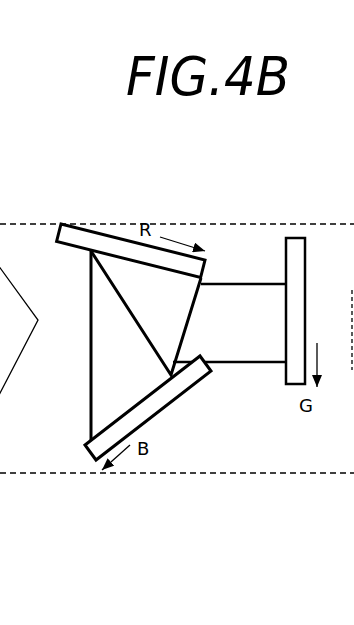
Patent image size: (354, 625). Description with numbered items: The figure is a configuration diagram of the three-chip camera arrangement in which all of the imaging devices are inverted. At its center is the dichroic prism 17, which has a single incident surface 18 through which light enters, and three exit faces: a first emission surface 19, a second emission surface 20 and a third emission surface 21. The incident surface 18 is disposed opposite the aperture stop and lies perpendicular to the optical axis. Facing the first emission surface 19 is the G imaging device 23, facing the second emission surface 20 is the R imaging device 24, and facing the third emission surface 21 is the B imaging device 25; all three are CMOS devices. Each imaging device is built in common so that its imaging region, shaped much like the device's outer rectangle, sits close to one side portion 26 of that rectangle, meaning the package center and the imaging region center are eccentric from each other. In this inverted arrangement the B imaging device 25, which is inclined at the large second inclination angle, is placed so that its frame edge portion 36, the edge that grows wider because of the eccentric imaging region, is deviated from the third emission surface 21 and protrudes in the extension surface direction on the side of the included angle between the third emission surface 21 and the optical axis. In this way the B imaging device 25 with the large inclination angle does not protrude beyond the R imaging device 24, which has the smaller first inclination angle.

The dichroic prism 17 is at (86, 283).
The incident surface 18 is at (90, 370).
The first emission surface 19 is at (288, 317).
The second emission surface 20 is at (117, 257).
The third emission surface 21 is at (140, 403).
The G imaging device 23 is at (305, 252).
The R imaging device 24 is at (107, 232).
The B imaging device 25 is at (192, 387).
The one side portion 26 is at (205, 267).
The frame edge portion 36 is at (185, 361).